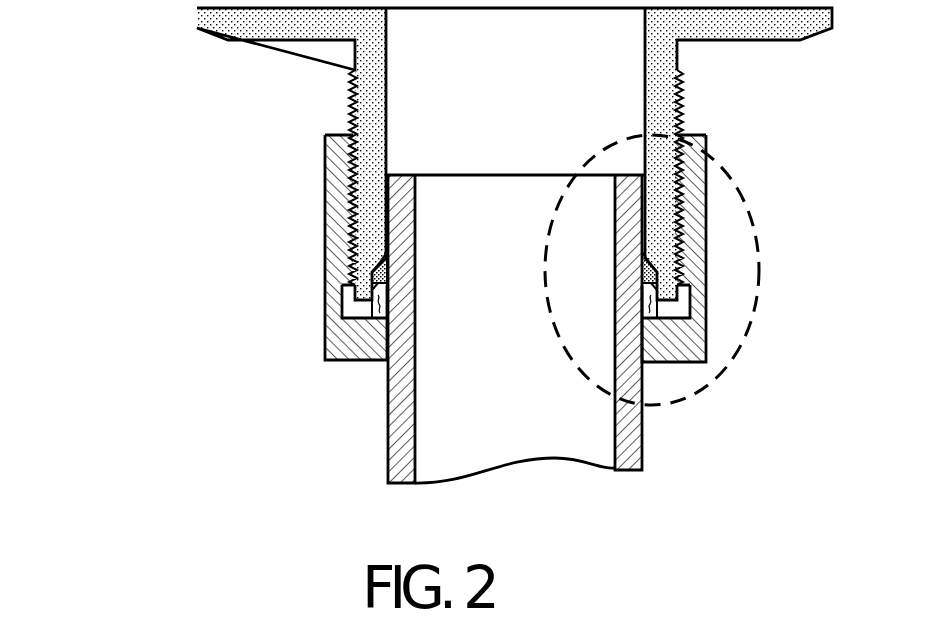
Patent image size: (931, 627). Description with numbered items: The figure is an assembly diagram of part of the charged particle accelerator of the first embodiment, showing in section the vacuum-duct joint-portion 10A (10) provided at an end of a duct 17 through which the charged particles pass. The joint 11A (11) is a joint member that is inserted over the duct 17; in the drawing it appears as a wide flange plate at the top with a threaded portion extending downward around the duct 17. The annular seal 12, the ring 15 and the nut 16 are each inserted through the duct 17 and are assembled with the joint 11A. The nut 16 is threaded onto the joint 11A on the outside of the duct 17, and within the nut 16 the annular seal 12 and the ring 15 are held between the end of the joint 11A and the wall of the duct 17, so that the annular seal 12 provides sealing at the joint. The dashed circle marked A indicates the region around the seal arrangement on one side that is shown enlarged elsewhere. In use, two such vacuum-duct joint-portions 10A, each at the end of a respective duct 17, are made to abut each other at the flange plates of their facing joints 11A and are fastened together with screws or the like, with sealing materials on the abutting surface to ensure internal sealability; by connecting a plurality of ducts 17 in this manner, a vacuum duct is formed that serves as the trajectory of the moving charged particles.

The vacuum-duct joint-portion 10 is at (437, 245).
The vacuum-duct joint-portion 10A is at (131, 218).
The joint member 11 is at (514, 154).
The joint 11A is at (262, 42).
The annular seal 12 is at (386, 278).
The ring 15 is at (384, 300).
The nut 16 is at (325, 258).
The duct 17 is at (388, 408).
The enlarged region A is at (762, 270).